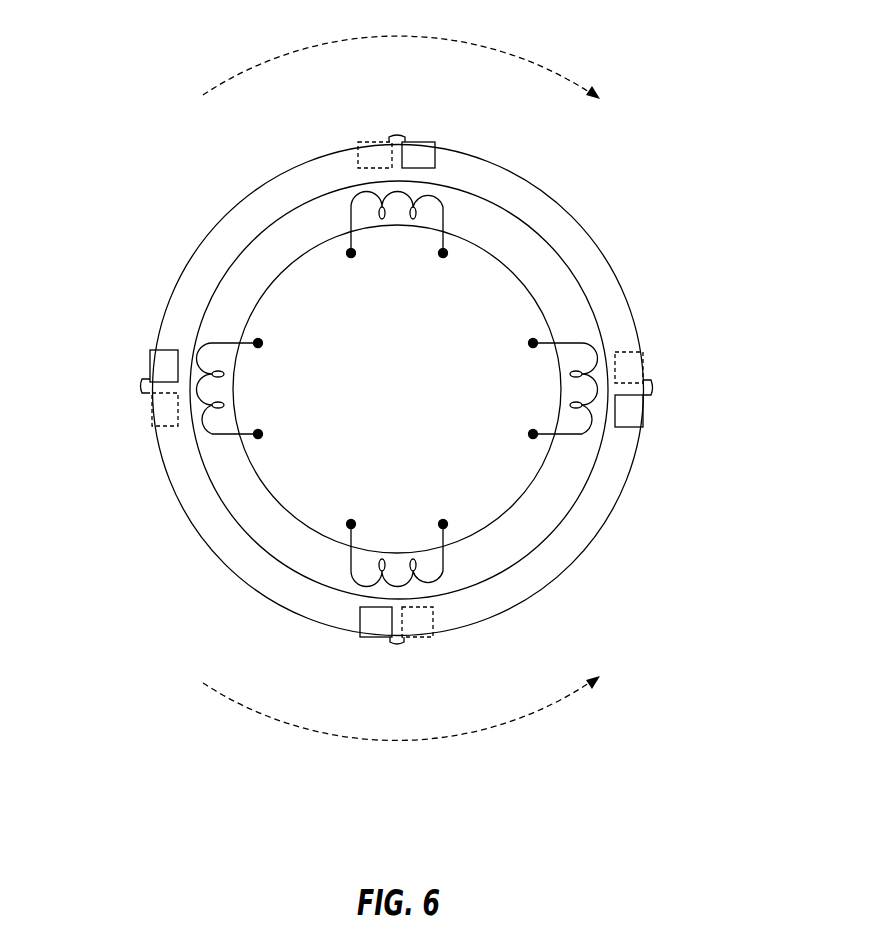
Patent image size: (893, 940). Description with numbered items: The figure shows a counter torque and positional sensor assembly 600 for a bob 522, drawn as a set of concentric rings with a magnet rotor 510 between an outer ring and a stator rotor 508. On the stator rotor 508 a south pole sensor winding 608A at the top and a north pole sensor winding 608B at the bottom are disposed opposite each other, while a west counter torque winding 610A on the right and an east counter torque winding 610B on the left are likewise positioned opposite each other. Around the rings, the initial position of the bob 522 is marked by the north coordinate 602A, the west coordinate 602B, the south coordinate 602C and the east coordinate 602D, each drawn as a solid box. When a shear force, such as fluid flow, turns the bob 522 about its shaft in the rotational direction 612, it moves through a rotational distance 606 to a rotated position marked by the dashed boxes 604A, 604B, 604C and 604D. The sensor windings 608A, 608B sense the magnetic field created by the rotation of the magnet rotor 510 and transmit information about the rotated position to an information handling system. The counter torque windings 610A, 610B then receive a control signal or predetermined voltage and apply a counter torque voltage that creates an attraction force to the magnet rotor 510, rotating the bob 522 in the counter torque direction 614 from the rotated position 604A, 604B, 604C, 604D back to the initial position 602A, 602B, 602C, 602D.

The counter torque and positional sensor assembly 600 is at (421, 384).
The bob 522 is at (617, 508).
The magnet rotor 510 is at (283, 208).
The stator rotor 508 is at (520, 287).
The counter torque direction 614 is at (390, 36).
The rotational direction 612 is at (397, 742).
The south pole sensor winding 608A is at (438, 196).
The north pole sensor winding 608B is at (438, 582).
The west counter torque winding 610A is at (590, 348).
The east counter torque winding 610B is at (205, 348).
The initial position north coordinate 602A is at (370, 637).
The initial position west coordinate 602B is at (645, 420).
The initial position south coordinate 602C is at (428, 142).
The initial position east coordinate 602D is at (151, 362).
The rotated position north coordinate 604A is at (428, 638).
The rotated position west coordinate 604B is at (643, 362).
The rotated position south coordinate 604C is at (367, 142).
The rotated position east coordinate 604D is at (152, 418).
The rotational distance 606 is at (396, 134).